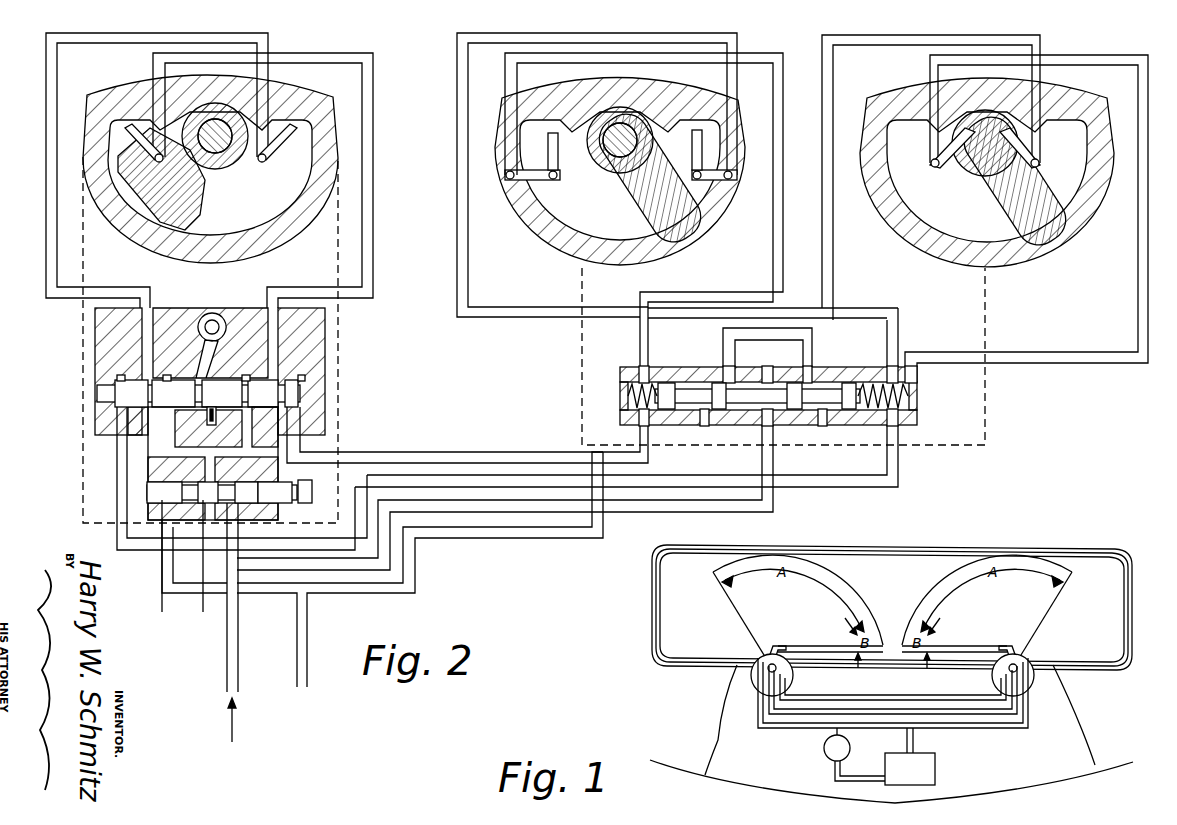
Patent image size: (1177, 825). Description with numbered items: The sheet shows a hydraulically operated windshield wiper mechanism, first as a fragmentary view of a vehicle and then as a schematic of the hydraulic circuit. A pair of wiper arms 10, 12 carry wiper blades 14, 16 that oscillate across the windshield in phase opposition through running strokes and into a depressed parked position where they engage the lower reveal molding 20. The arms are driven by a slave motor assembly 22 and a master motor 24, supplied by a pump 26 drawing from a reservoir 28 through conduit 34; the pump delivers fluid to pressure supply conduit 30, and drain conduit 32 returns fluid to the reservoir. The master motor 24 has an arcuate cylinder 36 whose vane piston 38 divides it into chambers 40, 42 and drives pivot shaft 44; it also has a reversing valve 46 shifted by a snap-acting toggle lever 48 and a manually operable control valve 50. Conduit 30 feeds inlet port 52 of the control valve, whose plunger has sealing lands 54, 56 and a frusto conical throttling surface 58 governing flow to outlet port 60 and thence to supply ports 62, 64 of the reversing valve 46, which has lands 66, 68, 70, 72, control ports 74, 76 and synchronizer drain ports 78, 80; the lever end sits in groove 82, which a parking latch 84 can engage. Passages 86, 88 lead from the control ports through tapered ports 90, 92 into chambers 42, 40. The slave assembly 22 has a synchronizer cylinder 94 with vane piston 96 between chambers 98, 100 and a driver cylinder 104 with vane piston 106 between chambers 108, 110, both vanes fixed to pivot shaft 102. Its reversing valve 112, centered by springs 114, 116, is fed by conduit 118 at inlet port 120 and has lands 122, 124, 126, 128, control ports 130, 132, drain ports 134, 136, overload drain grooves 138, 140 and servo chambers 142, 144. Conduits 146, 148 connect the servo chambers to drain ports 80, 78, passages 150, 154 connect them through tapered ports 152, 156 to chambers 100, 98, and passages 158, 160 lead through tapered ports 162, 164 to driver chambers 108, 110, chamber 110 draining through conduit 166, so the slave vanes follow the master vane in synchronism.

In FIG. 1, the wiper arm 10 is at (1010, 652).
In FIG. 1, the wiper arm 12 is at (776, 652).
In FIG. 1, the wiper blade 14 is at (945, 645).
In FIG. 1, the wiper blade 16 is at (840, 645).
In FIG. 1, the lower reveal molding 20 is at (1093, 667).
In FIG. 2, the slave motor assembly 22 is at (576, 352).
In FIG. 1, the slave motor assembly 22 is at (1050, 682).
In FIG. 2, the master motor 24 is at (350, 352).
In FIG. 1, the master motor 24 is at (745, 678).
In FIG. 1, the pump 26 is at (824, 752).
In FIG. 1, the reservoir 28 is at (925, 782).
In FIG. 2, the pressure supply conduit 30 is at (241, 660).
In FIG. 1, the pressure supply conduit 30 is at (835, 730).
In FIG. 2, the drain conduit 32 is at (305, 700).
In FIG. 1, the drain conduit 32 is at (917, 748).
In FIG. 1, the conduit 34 is at (862, 782).
In FIG. 2, the arcuate cylinder 36 is at (340, 133).
In FIG. 2, the vane piston 38 is at (173, 212).
In FIG. 2, the chamber 40 is at (118, 135).
In FIG. 2, the chamber 42 is at (283, 192).
In FIG. 2, the pivot shaft 44 is at (222, 130).
In FIG. 2, the reversing valve 46 is at (312, 394).
In FIG. 2, the snap-acting toggle lever 48 is at (216, 314).
In FIG. 2, the control valve 50 is at (312, 490).
In FIG. 2, the inlet port 52 is at (232, 510).
In FIG. 2, the sealing land 54 is at (285, 494).
In FIG. 2, the sealing land 56 is at (165, 491).
In FIG. 2, the frusto conical throttling surface 58 is at (236, 498).
In FIG. 2, the outlet port 60 is at (210, 476).
In FIG. 2, the pressure supply port 62 is at (165, 432).
In FIG. 2, the pressure supply port 64 is at (245, 445).
In FIG. 2, the sealing land 66 is at (100, 392).
In FIG. 2, the sealing land 68 is at (185, 380).
In FIG. 2, the sealing land 70 is at (240, 385).
In FIG. 2, the sealing land 72 is at (292, 386).
In FIG. 2, the control port 74 is at (135, 376).
In FIG. 2, the control port 76 is at (272, 380).
In FIG. 2, the synchronizer drain port 78 is at (120, 410).
In FIG. 2, the synchronizer drain port 80 is at (300, 408).
In FIG. 2, the annular groove 82 is at (195, 386).
In FIG. 2, the parking latch 84 is at (216, 418).
In FIG. 2, the passage 86 is at (46, 270).
In FIG. 2, the passage 88 is at (374, 255).
In FIG. 2, the tapered port 90 is at (128, 128).
In FIG. 2, the tapered port 92 is at (281, 143).
In FIG. 2, the synchronizer cylinder 94 is at (550, 244).
In FIG. 2, the vane piston 96 is at (682, 205).
In FIG. 2, the chamber 98 is at (680, 128).
In FIG. 2, the chamber 100 is at (613, 238).
In FIG. 2, the pivot shaft 102 is at (616, 126).
In FIG. 2, the driver cylinder 104 is at (906, 244).
In FIG. 2, the vane piston 106 is at (1060, 192).
In FIG. 2, the chamber 108 is at (1078, 140).
In FIG. 2, the chamber 110 is at (955, 212).
In FIG. 2, the reversing valve 112 is at (918, 390).
In FIG. 2, the spring 114 is at (657, 386).
In FIG. 2, the spring 116 is at (870, 410).
In FIG. 2, the conduit 118 is at (768, 500).
In FIG. 1, the conduit 118 is at (1008, 730).
In FIG. 2, the pressure inlet port 120 is at (770, 386).
In FIG. 2, the sealing land 122 is at (672, 408).
In FIG. 2, the sealing land 124 is at (718, 410).
In FIG. 2, the sealing land 126 is at (800, 410).
In FIG. 2, the sealing land 128 is at (845, 410).
In FIG. 2, the control port 130 is at (736, 366).
In FIG. 2, the control port 132 is at (806, 370).
In FIG. 2, the drain port 134 is at (698, 408).
In FIG. 2, the drain port 136 is at (818, 410).
In FIG. 2, the overload drain groove 138 is at (733, 368).
In FIG. 2, the overload drain groove 140 is at (858, 383).
In FIG. 2, the servo chamber 142 is at (648, 392).
In FIG. 2, the servo chamber 144 is at (890, 394).
In FIG. 2, the conduit 146 is at (490, 452).
In FIG. 1, the conduit 146 is at (985, 700).
In FIG. 2, the conduit 148 is at (520, 476).
In FIG. 1, the conduit 148 is at (842, 703).
In FIG. 2, the passage 150 is at (722, 300).
In FIG. 2, the tapered port 152 is at (558, 165).
In FIG. 2, the passage 154 is at (893, 304).
In FIG. 2, the tapered port 156 is at (702, 152).
In FIG. 2, the passage 158 is at (822, 250).
In FIG. 2, the passage 160 is at (1097, 364).
In FIG. 2, the tapered port 162 is at (1050, 150).
In FIG. 2, the tapered port 164 is at (932, 145).
In FIG. 1, the conduit 166 is at (960, 728).